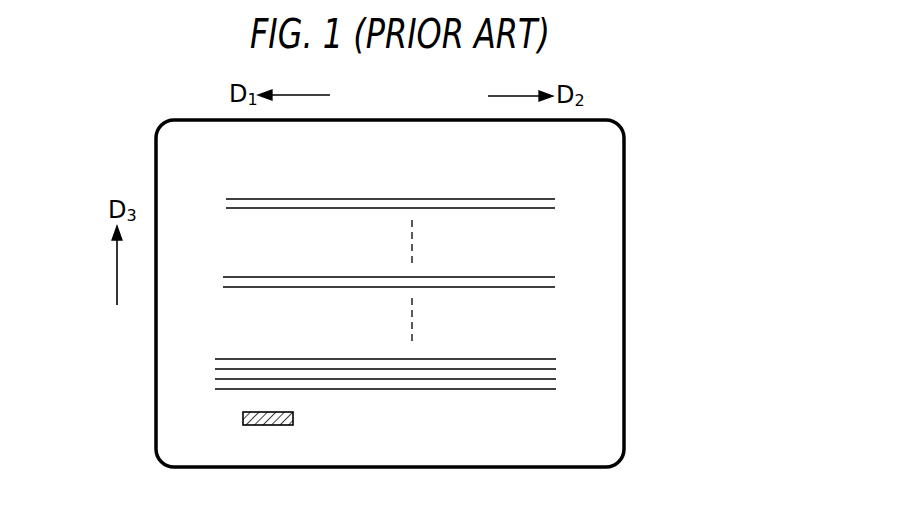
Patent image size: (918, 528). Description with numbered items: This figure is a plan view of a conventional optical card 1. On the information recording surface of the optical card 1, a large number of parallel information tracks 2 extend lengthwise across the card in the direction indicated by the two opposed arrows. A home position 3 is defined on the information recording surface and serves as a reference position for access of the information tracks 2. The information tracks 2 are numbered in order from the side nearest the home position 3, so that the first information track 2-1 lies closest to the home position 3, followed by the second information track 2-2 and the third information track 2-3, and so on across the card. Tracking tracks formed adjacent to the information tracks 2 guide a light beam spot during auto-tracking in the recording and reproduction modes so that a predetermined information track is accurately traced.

The optical card 1 is at (625, 181).
The information tracks 2 is at (554, 277).
The first information track 2-1 is at (214, 389).
The second information track 2-2 is at (214, 379).
The third information track 2-3 is at (214, 368).
The home position 3 is at (293, 418).